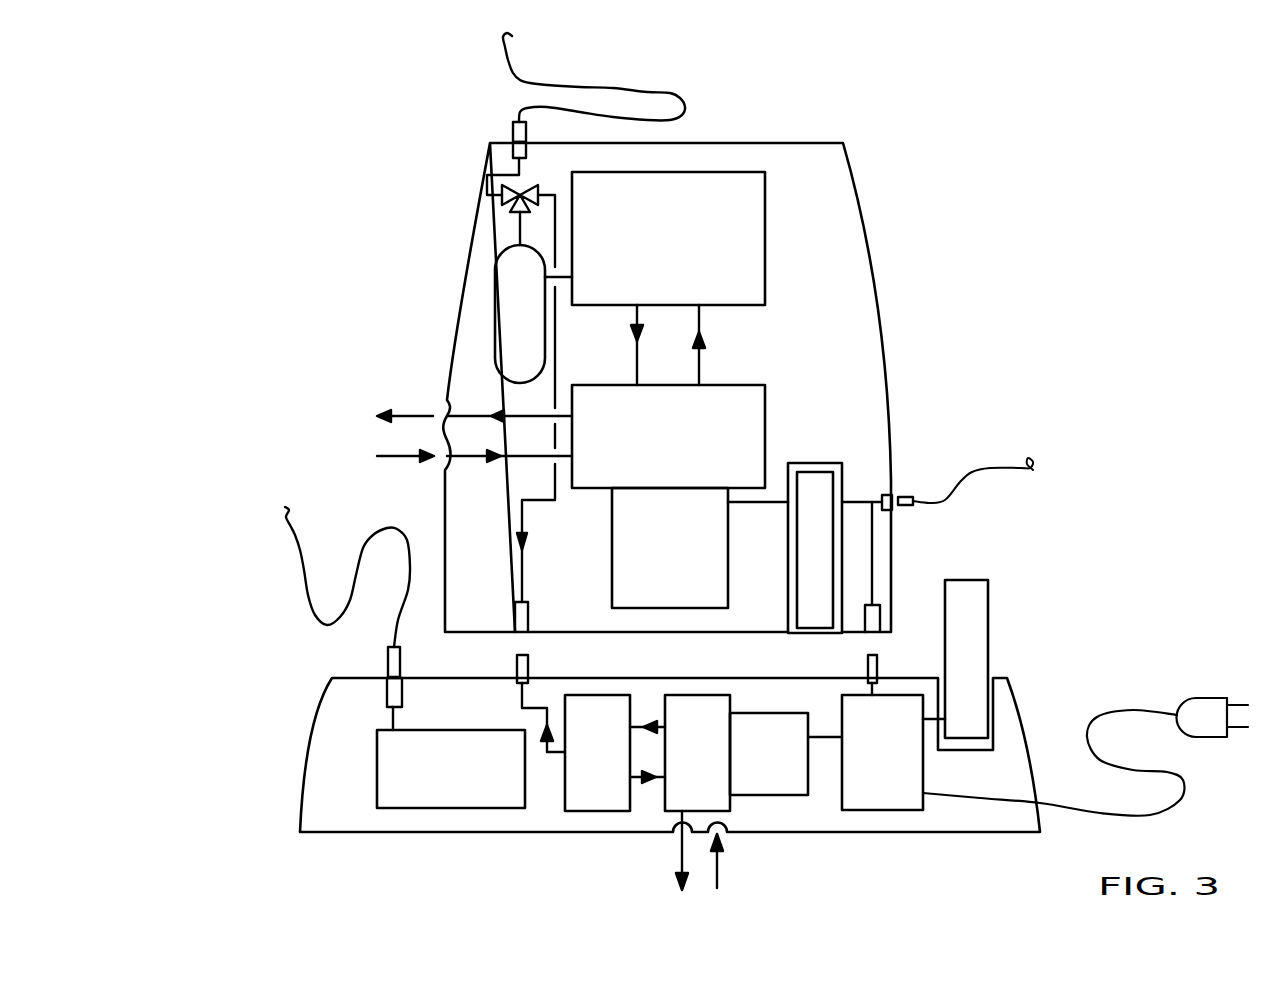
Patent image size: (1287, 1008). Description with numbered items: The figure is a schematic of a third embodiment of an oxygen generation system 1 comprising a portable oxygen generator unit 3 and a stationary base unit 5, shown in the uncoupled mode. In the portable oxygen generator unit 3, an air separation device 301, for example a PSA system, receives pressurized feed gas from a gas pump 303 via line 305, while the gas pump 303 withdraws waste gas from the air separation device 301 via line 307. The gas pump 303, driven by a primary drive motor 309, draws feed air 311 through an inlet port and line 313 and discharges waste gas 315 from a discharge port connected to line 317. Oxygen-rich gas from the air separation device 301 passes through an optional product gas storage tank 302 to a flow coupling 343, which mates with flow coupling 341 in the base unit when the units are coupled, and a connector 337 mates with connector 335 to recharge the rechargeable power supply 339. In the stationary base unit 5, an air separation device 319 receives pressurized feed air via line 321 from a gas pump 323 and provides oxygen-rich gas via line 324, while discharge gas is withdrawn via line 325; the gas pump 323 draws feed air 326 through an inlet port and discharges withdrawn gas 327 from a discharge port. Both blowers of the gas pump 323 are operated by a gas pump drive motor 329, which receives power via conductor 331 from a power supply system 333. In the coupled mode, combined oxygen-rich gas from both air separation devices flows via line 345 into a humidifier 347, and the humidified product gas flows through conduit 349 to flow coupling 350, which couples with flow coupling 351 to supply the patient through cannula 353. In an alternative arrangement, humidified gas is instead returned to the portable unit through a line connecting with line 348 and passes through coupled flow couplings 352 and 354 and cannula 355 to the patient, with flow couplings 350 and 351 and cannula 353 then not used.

The oxygen generation system 1 is at (945, 260).
The portable oxygen generator unit 3 is at (870, 202).
The stationary base unit 5 is at (289, 781).
The air separation device 301 is at (684, 245).
The product gas storage tank 302 is at (495, 305).
The gas pump 303 is at (687, 447).
The line 305 is at (702, 364).
The line 307 is at (634, 368).
The primary drive motor 309 is at (689, 562).
The feed air 311 is at (393, 461).
The line 313 is at (537, 459).
The waste gas 315 is at (409, 411).
The line 317 is at (537, 420).
The air separation device 319 is at (619, 772).
The line 321 is at (636, 726).
The gas pump 323 is at (718, 772).
The line 324 is at (546, 706).
The line 325 is at (637, 779).
The feed air 326 is at (722, 870).
The withdrawn gas 327 is at (678, 857).
The gas pump drive motor 329 is at (789, 772).
The conductor 331 is at (827, 739).
The power supply system 333 is at (902, 772).
The connector 335 is at (868, 663).
The connector 337 is at (893, 617).
The rechargeable power supply 339 is at (812, 487).
The flow coupling 341 is at (517, 667).
The flow coupling 343 is at (529, 612).
The line 345 is at (518, 718).
The humidifier 347 is at (473, 778).
The line 348 is at (487, 186).
The conduit 349 is at (393, 717).
The flow coupling 350 is at (392, 692).
The flow coupling 351 is at (387, 660).
The flow coupling 352 is at (513, 152).
The cannula 353 is at (310, 600).
The flow coupling 354 is at (513, 130).
The cannula 355 is at (685, 108).